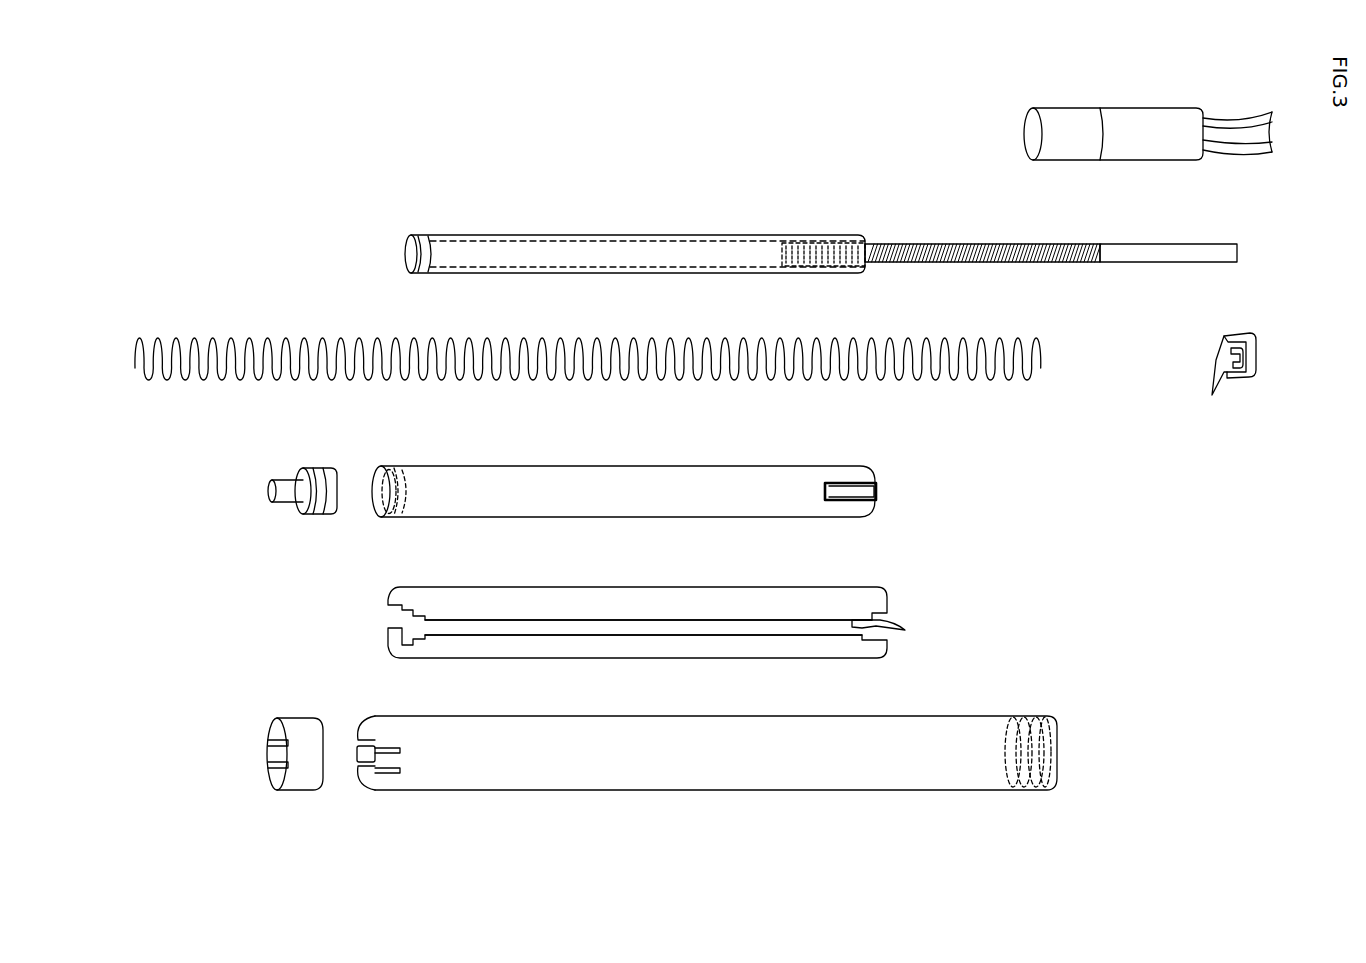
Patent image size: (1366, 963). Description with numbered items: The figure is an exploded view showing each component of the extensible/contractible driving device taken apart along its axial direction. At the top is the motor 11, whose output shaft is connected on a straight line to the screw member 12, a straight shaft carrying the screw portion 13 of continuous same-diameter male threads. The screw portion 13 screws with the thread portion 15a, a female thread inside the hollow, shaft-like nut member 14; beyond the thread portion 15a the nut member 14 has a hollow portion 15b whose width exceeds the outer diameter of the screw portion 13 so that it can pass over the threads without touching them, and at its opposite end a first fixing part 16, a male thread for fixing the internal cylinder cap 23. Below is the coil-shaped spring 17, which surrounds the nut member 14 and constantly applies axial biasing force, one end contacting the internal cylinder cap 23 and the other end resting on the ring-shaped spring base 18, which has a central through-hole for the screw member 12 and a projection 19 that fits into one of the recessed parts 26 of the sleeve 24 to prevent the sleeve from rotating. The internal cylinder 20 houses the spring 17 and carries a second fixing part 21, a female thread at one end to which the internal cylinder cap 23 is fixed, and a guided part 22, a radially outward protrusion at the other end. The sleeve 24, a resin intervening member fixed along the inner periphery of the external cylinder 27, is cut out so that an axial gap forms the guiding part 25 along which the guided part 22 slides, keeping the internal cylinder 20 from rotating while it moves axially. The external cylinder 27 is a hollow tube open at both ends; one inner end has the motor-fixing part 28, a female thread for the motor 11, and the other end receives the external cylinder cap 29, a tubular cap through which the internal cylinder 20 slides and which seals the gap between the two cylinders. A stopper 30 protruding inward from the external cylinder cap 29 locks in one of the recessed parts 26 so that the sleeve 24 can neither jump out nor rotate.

The motor 11 is at (1138, 112).
The screw member 12 is at (1168, 243).
The screw portion 13 is at (963, 243).
The nut member 14 is at (589, 234).
The thread portion 15a is at (834, 268).
The hollow portion 15b is at (674, 266).
The first fixing part 16 is at (423, 234).
The spring 17 is at (330, 331).
The spring base 18 is at (1244, 380).
The projection 19 is at (1214, 395).
The internal cylinder 20 is at (543, 465).
The second fixing part 21 is at (404, 470).
The guided part 22 is at (880, 490).
The internal cylinder cap 23 is at (326, 467).
The sleeve 24 is at (660, 586).
The guiding part 25 is at (625, 636).
The recessed part 26 is at (905, 630).
The external cylinder 27 is at (680, 791).
The motor-fixing part 28 is at (1044, 716).
The external cylinder cap 29 is at (305, 717).
The stopper 30 is at (268, 765).